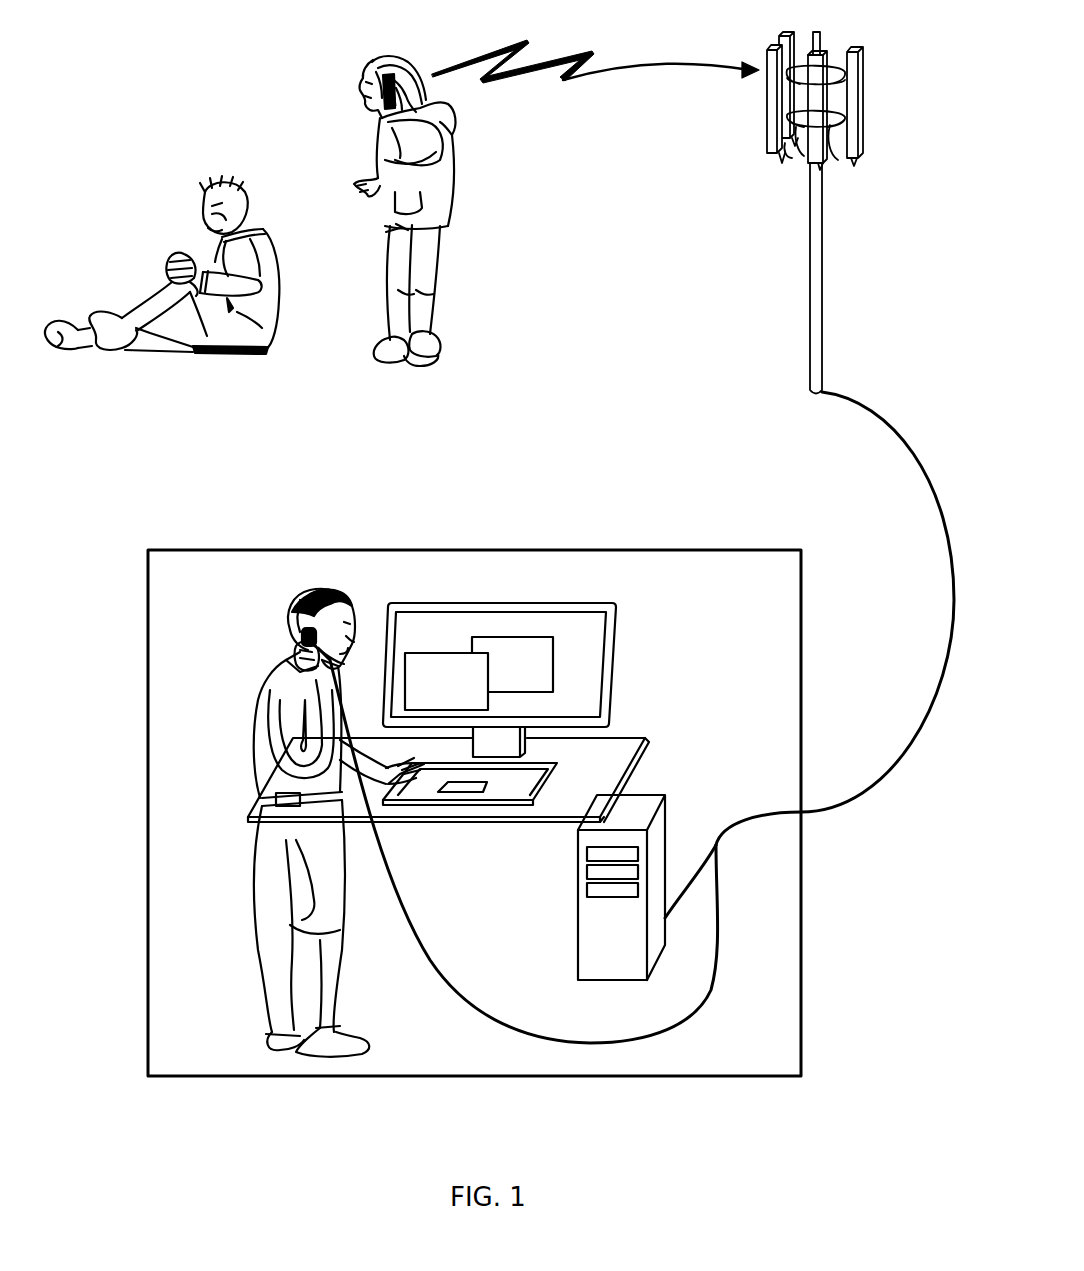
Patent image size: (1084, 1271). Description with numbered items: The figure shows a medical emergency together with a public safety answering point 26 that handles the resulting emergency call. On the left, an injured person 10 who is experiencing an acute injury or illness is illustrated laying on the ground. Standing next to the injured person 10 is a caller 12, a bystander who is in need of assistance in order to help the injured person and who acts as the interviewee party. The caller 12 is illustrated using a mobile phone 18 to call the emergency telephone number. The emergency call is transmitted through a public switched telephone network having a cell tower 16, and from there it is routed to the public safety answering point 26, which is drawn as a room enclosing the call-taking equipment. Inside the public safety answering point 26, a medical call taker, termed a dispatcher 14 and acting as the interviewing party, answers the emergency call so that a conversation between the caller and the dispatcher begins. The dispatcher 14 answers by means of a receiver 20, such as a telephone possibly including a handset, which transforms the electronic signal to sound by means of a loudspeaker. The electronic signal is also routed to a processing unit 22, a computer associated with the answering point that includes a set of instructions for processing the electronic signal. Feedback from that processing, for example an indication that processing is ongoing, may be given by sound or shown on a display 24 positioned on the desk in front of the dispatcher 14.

The injured person 10 is at (183, 252).
The caller 12 is at (372, 148).
The dispatcher 14 is at (262, 695).
The cell tower 16 is at (852, 143).
The mobile phone 18 is at (397, 83).
The receiver 20 is at (293, 637).
The processing unit 22 is at (658, 850).
The display 24 is at (582, 660).
The public safety answering point 26 is at (291, 550).